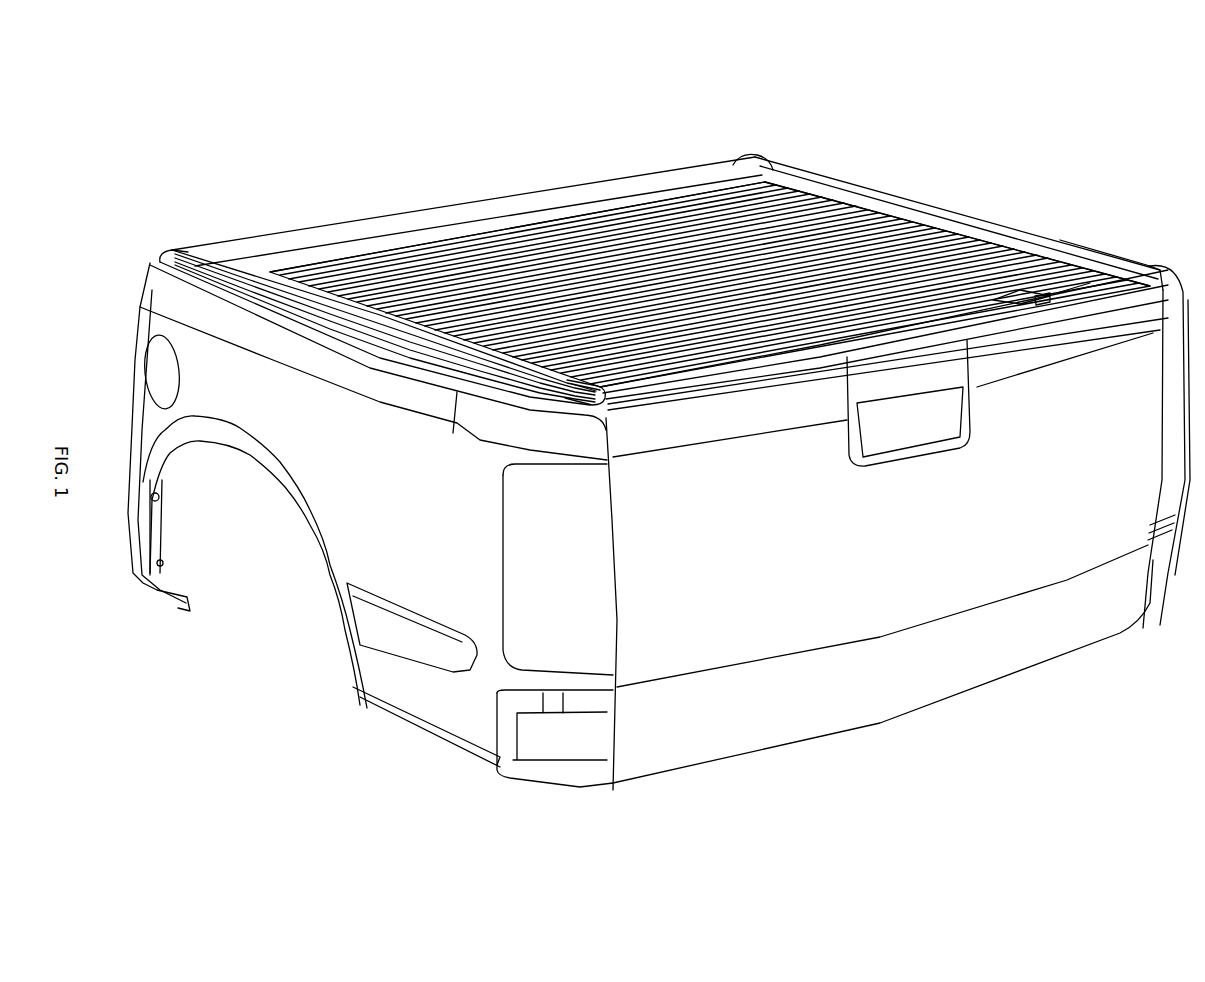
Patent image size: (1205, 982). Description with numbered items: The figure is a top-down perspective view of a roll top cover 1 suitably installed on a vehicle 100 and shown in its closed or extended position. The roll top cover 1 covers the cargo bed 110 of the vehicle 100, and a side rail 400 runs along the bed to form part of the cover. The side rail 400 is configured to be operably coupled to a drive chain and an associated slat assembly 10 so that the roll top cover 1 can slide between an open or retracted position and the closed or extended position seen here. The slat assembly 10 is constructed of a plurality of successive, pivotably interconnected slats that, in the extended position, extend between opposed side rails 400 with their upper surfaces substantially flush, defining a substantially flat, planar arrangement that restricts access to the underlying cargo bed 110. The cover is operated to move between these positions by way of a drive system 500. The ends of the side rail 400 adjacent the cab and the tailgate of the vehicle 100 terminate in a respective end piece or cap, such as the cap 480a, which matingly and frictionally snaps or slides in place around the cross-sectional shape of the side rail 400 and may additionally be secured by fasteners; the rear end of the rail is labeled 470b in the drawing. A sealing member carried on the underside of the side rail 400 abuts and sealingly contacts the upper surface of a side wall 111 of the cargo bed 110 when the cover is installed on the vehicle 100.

The roll top cover 1 is at (497, 135).
The slat assembly 10 is at (867, 187).
The vehicle 100 is at (923, 767).
The cargo bed 110 is at (1067, 210).
The side wall 111 is at (350, 553).
The side rail 400 is at (237, 257).
The rail end cap 470b is at (563, 380).
The cap 480a is at (172, 250).
The drive system 500 is at (697, 180).